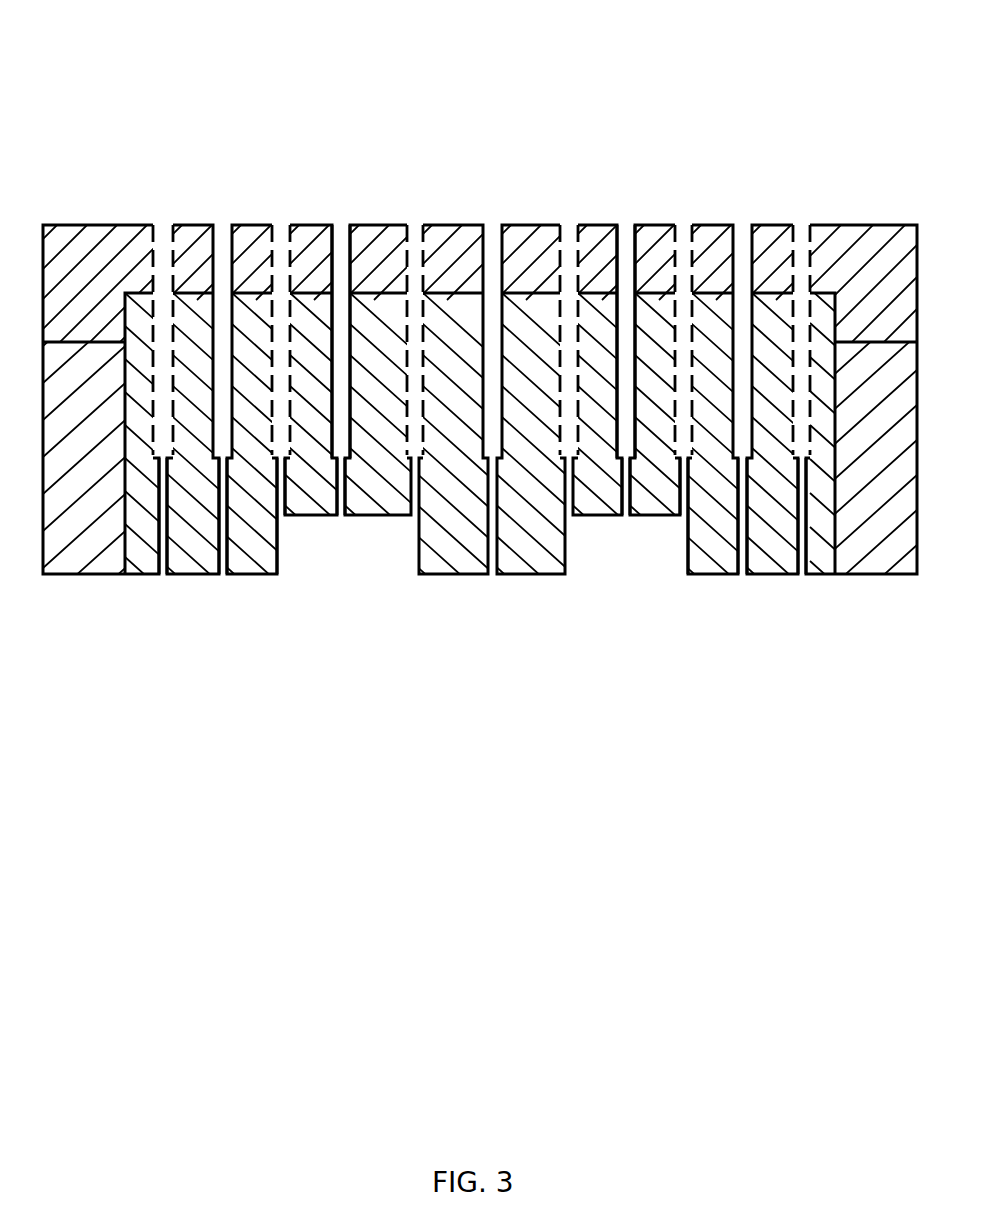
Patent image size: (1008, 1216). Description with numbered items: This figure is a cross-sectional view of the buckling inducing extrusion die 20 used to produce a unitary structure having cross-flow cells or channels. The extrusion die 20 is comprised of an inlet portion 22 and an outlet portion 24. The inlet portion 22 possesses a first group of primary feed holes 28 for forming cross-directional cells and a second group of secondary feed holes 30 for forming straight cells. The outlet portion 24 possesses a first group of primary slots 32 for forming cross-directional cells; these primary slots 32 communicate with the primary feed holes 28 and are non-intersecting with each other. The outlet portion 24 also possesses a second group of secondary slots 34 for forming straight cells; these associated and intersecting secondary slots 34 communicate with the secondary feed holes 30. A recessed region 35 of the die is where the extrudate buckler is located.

The extrusion die 20 is at (304, 98).
The inlet portion 22 is at (62, 224).
The outlet portion 24 is at (458, 576).
The primary feed holes 28 is at (627, 227).
The secondary feed holes 30 is at (280, 227).
The primary slots 32 is at (333, 576).
The secondary slots 34 is at (282, 576).
The recessed region 35 is at (398, 583).